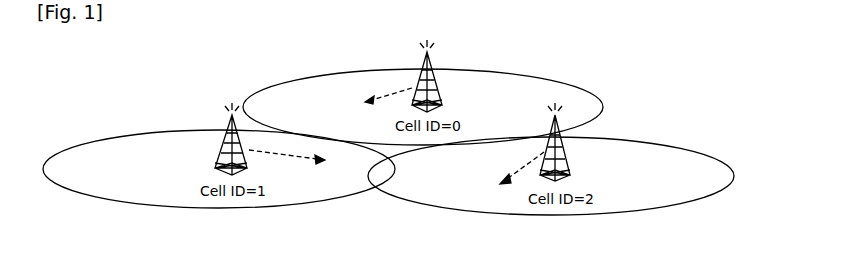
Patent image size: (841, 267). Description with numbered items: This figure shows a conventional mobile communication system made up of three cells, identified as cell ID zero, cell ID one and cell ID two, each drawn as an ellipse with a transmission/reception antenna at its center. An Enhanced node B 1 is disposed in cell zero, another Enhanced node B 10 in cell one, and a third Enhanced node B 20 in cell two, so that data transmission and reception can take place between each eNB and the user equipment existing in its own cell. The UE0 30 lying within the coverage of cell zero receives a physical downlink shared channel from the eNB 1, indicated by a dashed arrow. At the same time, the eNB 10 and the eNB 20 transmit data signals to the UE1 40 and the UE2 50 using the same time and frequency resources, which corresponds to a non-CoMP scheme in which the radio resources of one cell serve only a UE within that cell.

The Enhanced node B 1 is at (438, 86).
The Enhanced node B 10 is at (216, 157).
The Enhanced node B 20 is at (566, 158).
The user equipment UE0 30 is at (343, 95).
The user equipment UE1 40 is at (347, 176).
The user equipment UE2 50 is at (480, 198).